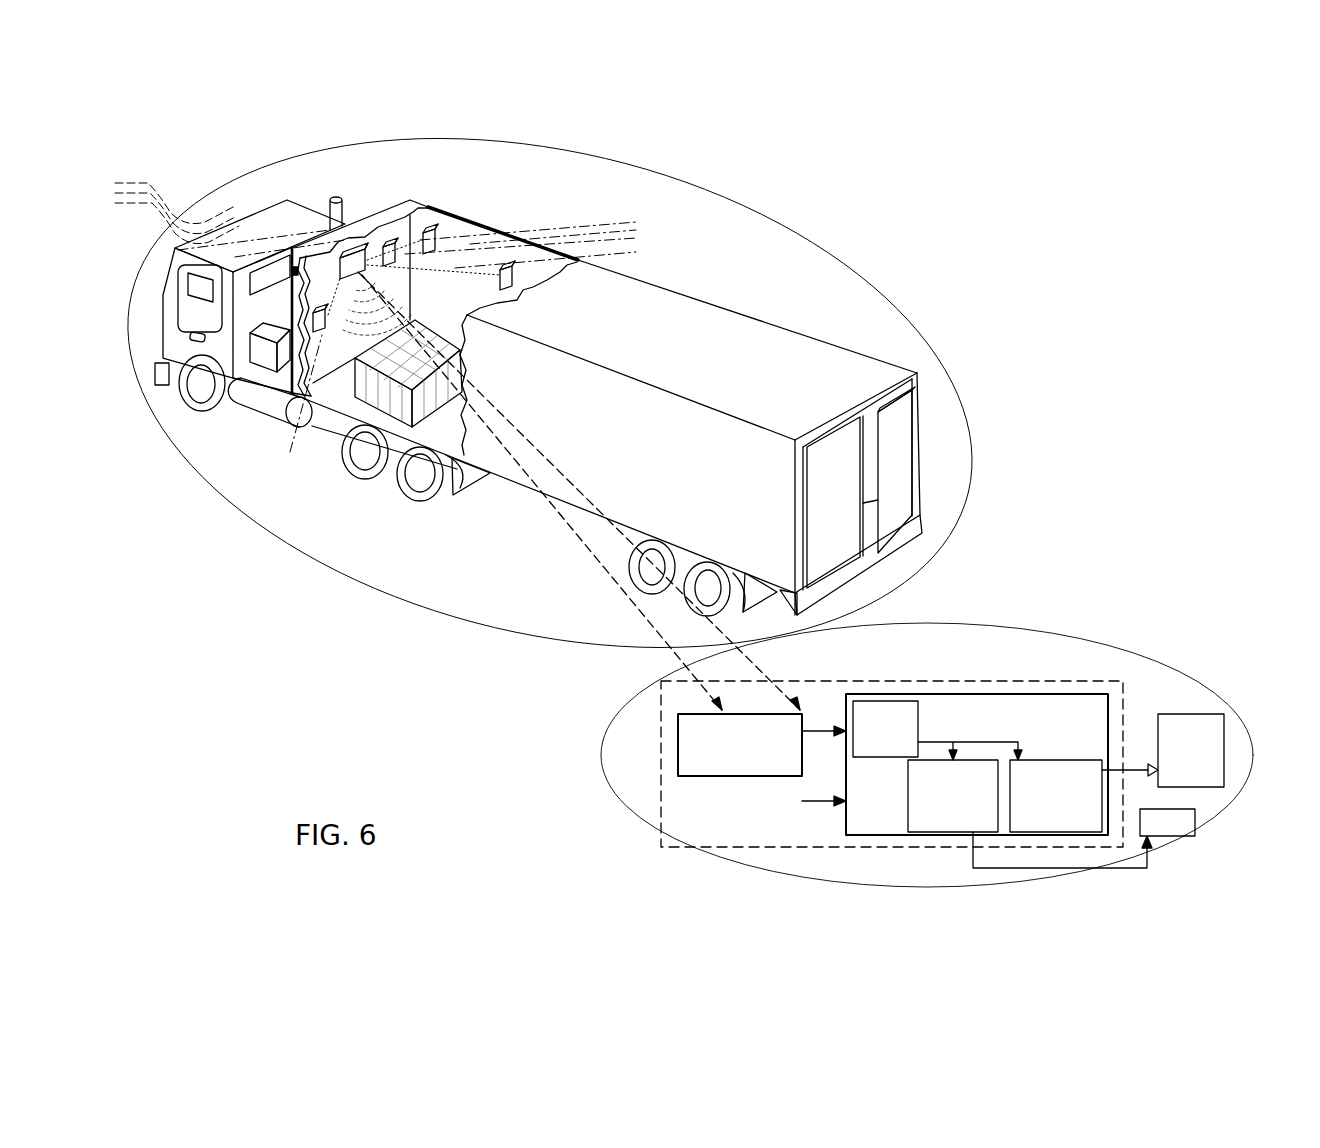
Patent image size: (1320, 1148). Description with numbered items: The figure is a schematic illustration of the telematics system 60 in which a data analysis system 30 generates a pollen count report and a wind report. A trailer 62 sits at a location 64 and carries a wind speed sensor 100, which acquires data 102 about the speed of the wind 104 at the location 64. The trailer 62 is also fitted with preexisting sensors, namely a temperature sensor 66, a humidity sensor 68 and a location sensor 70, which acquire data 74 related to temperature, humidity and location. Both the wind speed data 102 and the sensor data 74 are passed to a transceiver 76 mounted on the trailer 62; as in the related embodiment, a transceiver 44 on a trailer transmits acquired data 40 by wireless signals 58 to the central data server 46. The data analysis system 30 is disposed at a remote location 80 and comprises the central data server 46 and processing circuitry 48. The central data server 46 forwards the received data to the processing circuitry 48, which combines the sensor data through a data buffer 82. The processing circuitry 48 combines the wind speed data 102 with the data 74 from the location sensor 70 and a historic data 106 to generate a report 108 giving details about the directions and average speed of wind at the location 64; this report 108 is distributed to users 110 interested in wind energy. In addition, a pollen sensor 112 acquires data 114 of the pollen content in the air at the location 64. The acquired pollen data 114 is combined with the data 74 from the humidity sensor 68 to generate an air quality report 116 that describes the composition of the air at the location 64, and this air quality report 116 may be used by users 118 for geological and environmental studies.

The data analysis system 30 is at (1028, 681).
The data 40 is at (290, 267).
The transceiver 44 is at (336, 228).
The central data server 46 is at (678, 730).
The processing circuitry 48 is at (1073, 694).
The wireless signals 58 is at (418, 308).
The telematics system 60 is at (1108, 234).
The trailer 62 is at (745, 335).
The location 64 is at (272, 517).
The temperature sensor 66 is at (397, 243).
The humidity sensor 68 is at (437, 232).
The location sensor 70 is at (323, 330).
The data 74 is at (556, 228).
The transceiver 76 is at (362, 250).
The remote location 80 is at (622, 761).
The data buffer 82 is at (887, 701).
The wind speed sensor 100 is at (293, 276).
The data 102 is at (180, 262).
The wind 104 is at (168, 193).
The historic data 106 is at (808, 803).
The report 108 is at (950, 832).
The users 110 is at (1195, 822).
The pollen sensor 112 is at (512, 285).
The data 114 is at (581, 258).
The air quality report 116 is at (1063, 832).
The users 118 is at (1210, 714).